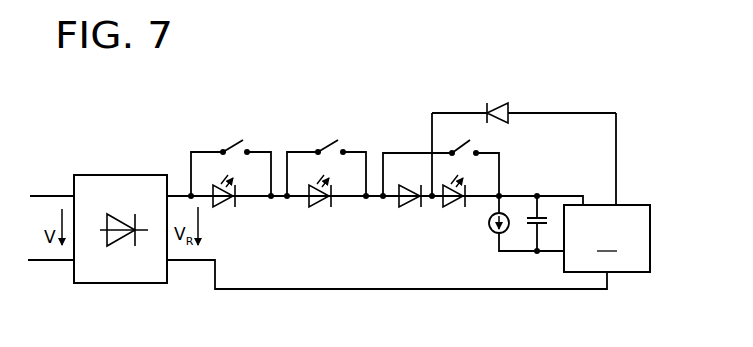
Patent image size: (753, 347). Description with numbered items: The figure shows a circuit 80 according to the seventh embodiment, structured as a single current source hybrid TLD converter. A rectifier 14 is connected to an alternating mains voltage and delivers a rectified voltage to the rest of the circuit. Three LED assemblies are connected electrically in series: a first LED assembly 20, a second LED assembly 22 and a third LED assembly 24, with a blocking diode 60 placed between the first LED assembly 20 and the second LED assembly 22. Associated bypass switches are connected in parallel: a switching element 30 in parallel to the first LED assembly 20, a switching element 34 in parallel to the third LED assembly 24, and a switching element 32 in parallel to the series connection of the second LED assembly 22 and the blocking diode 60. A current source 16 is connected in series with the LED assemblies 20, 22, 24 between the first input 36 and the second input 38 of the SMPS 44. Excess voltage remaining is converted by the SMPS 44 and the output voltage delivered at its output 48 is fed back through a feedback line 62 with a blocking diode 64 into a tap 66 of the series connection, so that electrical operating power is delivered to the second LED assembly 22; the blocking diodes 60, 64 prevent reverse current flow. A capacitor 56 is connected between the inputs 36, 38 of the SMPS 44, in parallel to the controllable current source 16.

The rectifier 14 is at (112, 175).
The switching element 34 is at (233, 146).
The switching element 30 is at (328, 146).
The switching element 32 is at (468, 143).
The third LED assembly 24 is at (226, 207).
The first LED assembly 20 is at (322, 207).
The second LED assembly 22 is at (449, 202).
The blocking diode 60 is at (405, 206).
The tap 66 is at (428, 202).
The blocking diode 64 is at (497, 106).
The feedback line 62 is at (600, 113).
The current source 16 is at (490, 236).
The capacitor 56 is at (534, 214).
The second input 38 is at (563, 252).
The first input 36 is at (584, 201).
The output 48 is at (628, 205).
The SMPS 44 is at (607, 242).
The circuit 80 is at (328, 73).